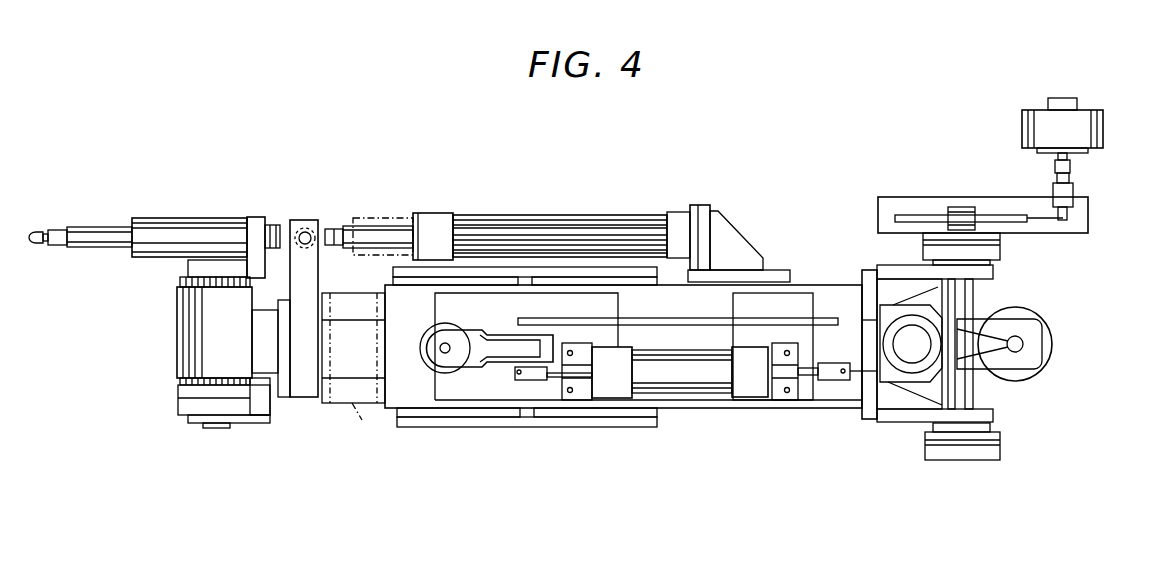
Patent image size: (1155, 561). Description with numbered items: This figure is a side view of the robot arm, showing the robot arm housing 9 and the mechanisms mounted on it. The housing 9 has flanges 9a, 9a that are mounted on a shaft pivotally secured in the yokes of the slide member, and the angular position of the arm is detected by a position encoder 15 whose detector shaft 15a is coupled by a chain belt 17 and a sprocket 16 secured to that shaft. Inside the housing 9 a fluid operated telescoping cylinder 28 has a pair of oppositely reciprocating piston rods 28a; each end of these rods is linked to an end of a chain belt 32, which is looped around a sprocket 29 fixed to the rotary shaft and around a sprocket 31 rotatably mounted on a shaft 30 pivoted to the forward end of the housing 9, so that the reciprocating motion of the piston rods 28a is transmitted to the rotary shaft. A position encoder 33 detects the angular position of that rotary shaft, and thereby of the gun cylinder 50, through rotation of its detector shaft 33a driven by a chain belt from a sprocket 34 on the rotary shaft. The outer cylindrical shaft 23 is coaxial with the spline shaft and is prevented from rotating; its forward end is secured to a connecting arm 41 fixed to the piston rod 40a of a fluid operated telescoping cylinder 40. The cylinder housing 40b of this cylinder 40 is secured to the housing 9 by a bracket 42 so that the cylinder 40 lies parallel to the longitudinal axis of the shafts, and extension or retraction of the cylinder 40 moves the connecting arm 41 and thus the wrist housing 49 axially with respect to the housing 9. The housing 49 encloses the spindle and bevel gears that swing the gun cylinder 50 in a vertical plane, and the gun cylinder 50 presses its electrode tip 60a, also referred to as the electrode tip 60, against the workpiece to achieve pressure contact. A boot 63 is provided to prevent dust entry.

The robot arm housing 9 is at (677, 405).
The flanges 9a is at (993, 273).
The position encoder 15 is at (1030, 118).
The detector shaft 15a is at (1072, 173).
The sprocket 16 is at (920, 213).
The chain belt 17 is at (1040, 215).
The outer cylindrical shaft 23 is at (342, 370).
The fluid operated telescoping cylinder 28 is at (703, 375).
The piston rods 28a is at (557, 400).
The sprocket 29 is at (910, 367).
The shaft 30 is at (445, 357).
The sprocket 31 is at (426, 370).
The chain belt 32 is at (643, 322).
The position encoder 33 is at (1047, 347).
The detector shaft 33a is at (1020, 340).
The sprocket 34 is at (907, 335).
The fluid operated telescoping cylinder 40 is at (560, 213).
The piston rod 40a is at (368, 232).
The cylinder housing 40b is at (612, 222).
The connecting arm 41 is at (300, 385).
The bracket 42 is at (722, 230).
The housing 49 is at (193, 343).
The gun cylinder 50 is at (200, 227).
The electrode tips 60 is at (95, 232).
The electrode tips 60a is at (38, 228).
The boot 63 is at (402, 213).